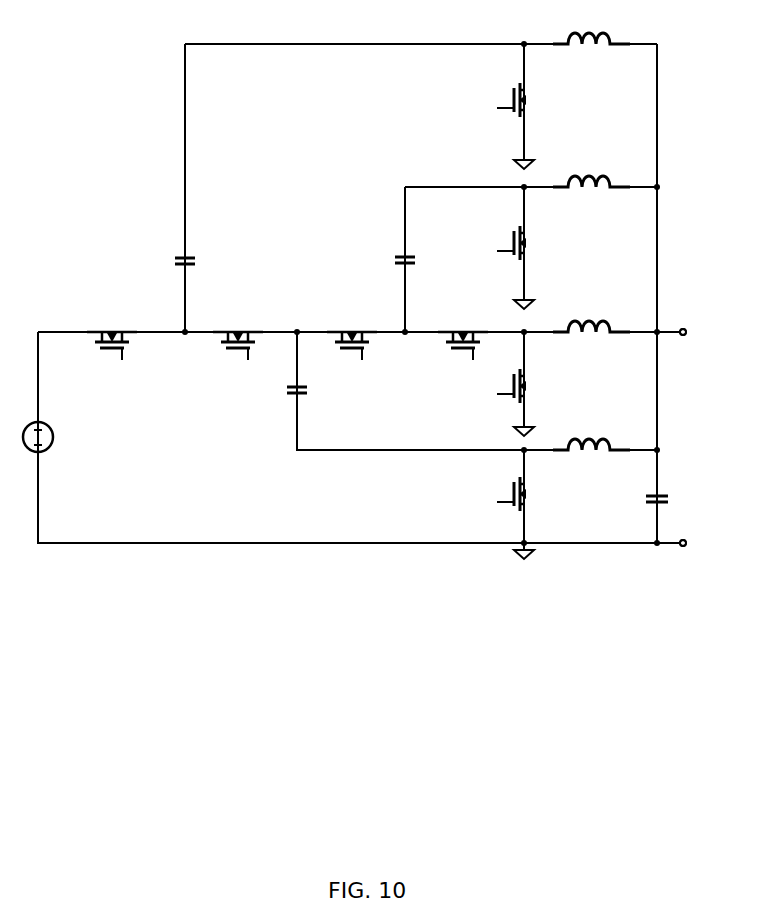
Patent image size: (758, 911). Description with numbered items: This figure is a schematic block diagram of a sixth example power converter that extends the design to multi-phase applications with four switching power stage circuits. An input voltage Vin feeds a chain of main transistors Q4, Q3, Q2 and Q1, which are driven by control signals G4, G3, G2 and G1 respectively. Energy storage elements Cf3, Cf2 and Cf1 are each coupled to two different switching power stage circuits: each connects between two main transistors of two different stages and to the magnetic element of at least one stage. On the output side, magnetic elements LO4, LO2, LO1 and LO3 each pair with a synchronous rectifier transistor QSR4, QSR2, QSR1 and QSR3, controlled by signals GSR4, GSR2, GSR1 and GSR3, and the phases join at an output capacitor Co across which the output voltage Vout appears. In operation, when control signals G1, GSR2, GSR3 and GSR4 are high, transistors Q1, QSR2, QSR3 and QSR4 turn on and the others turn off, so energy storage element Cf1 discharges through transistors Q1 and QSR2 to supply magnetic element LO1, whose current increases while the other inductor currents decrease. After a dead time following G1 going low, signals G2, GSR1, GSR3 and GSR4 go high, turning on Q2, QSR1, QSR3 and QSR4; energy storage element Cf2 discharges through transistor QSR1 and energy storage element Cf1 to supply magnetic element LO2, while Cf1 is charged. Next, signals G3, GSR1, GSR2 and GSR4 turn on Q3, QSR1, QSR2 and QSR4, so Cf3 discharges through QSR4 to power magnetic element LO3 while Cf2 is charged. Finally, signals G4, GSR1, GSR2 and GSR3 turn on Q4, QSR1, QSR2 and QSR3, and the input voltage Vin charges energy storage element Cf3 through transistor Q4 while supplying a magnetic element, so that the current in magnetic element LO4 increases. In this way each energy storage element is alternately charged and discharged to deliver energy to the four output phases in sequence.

The input voltage Vin is at (58, 439).
The transistor Q4 is at (112, 333).
The control signal G4 is at (133, 367).
The transistor Q3 is at (238, 333).
The control signal G3 is at (261, 367).
The transistor Q2 is at (352, 333).
The control signal G2 is at (372, 368).
The transistor Q1 is at (463, 332).
The control signal G1 is at (484, 367).
The energy storage element Cf3 is at (204, 266).
The energy storage element Cf2 is at (316, 394).
The energy storage element Cf1 is at (419, 274).
The output capacitor Co is at (640, 502).
The output voltage Vout is at (694, 437).
The magnetic element LO4 is at (595, 30).
The magnetic element LO2 is at (595, 170).
The magnetic element LO1 is at (596, 316).
The magnetic element LO3 is at (595, 434).
The transistor QSR4 is at (547, 103).
The control signal GSR4 is at (478, 109).
The transistor QSR2 is at (547, 243).
The control signal GSR2 is at (478, 244).
The transistor QSR1 is at (547, 386).
The control signal GSR1 is at (484, 409).
The transistor QSR3 is at (547, 498).
The control signal GSR3 is at (481, 504).